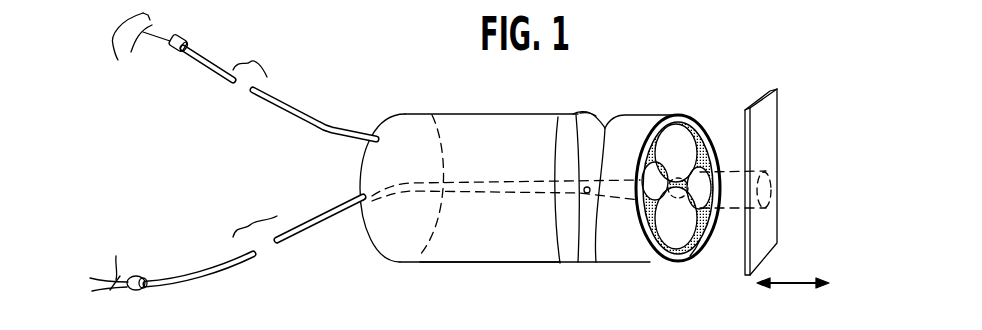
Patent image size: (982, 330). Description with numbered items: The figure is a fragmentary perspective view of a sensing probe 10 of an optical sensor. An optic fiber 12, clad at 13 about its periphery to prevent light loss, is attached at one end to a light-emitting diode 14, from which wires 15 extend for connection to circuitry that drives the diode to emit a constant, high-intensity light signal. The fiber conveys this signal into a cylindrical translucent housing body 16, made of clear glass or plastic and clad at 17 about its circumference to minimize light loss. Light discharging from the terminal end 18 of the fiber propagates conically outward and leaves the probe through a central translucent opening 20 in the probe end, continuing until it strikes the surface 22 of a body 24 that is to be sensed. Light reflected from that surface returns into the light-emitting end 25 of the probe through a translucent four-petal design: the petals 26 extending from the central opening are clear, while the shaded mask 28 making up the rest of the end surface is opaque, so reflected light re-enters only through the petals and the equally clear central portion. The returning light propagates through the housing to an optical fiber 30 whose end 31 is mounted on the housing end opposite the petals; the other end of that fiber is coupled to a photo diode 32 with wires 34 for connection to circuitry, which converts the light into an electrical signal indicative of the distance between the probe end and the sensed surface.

The sensing probe 10 is at (516, 115).
The optic fiber 12 is at (323, 224).
The cladding 13 is at (258, 254).
The light-emitting diode 14 is at (134, 278).
The wires 15 is at (111, 276).
The translucent housing body 16 is at (512, 242).
The cladding 17 is at (605, 127).
The terminal end 18 is at (558, 263).
The central translucent opening 20 is at (712, 165).
The surface 22 is at (740, 250).
The body 24 is at (768, 137).
The end 25 is at (678, 141).
The petals 26 is at (705, 247).
The mask 28 is at (650, 250).
The optical fiber 30 is at (292, 102).
The end 31 is at (433, 114).
The photo diode 32 is at (183, 38).
The wires 34 is at (141, 45).